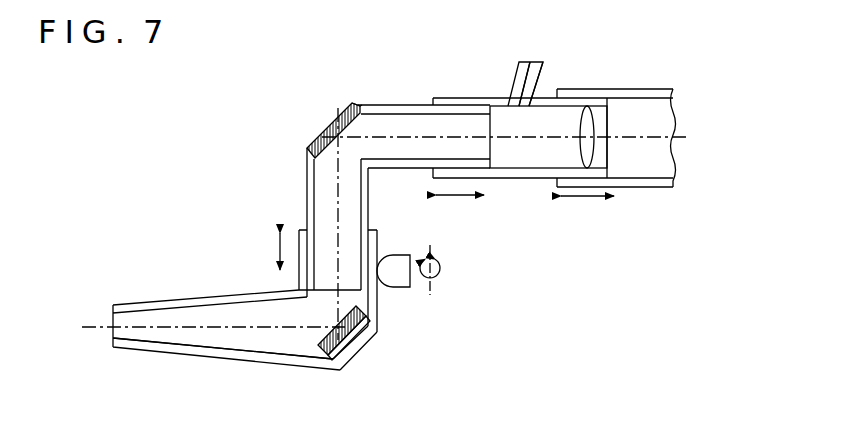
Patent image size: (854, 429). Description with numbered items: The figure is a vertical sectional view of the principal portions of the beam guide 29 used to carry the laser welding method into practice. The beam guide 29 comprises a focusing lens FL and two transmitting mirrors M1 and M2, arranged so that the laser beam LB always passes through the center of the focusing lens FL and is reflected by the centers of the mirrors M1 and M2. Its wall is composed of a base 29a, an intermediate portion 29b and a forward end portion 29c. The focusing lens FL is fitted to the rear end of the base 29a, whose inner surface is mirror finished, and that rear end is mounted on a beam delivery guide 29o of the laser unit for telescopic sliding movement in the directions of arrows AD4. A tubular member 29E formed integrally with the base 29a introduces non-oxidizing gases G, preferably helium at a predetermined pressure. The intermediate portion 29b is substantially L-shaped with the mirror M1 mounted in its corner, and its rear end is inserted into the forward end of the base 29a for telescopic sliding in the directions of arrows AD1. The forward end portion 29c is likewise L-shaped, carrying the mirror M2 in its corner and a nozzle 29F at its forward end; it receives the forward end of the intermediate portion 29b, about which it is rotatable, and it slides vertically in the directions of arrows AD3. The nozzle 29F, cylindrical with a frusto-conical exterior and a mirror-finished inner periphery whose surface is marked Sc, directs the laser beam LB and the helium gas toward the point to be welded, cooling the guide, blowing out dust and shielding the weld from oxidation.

The beam guide 29 is at (304, 193).
The base 29a is at (440, 97).
The intermediate portion 29b is at (368, 91).
The forward end portion 29c is at (377, 240).
The tubular member 29E is at (513, 78).
The nozzle 29F is at (113, 305).
The beam delivery guide 29o is at (652, 188).
The non-oxidizing gases G is at (533, 56).
The transmitting mirror M1 is at (330, 124).
The transmitting mirror M2 is at (355, 339).
The laser beam LB is at (564, 143).
The focusing lens FL is at (591, 122).
The scanning surface Sc is at (192, 345).
The arrows AD1 is at (460, 215).
The arrows AD3 is at (256, 253).
The arrows AD4 is at (517, 245).